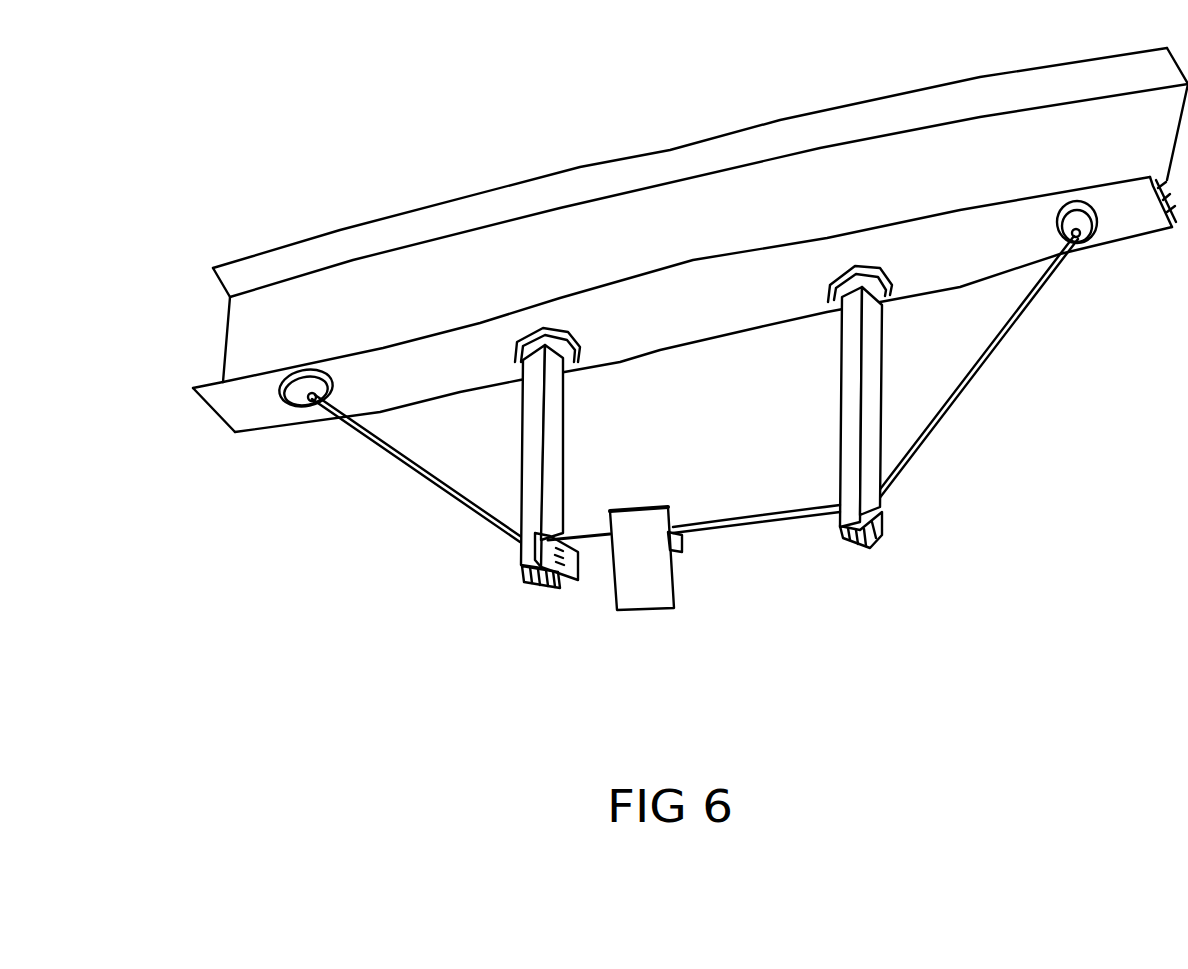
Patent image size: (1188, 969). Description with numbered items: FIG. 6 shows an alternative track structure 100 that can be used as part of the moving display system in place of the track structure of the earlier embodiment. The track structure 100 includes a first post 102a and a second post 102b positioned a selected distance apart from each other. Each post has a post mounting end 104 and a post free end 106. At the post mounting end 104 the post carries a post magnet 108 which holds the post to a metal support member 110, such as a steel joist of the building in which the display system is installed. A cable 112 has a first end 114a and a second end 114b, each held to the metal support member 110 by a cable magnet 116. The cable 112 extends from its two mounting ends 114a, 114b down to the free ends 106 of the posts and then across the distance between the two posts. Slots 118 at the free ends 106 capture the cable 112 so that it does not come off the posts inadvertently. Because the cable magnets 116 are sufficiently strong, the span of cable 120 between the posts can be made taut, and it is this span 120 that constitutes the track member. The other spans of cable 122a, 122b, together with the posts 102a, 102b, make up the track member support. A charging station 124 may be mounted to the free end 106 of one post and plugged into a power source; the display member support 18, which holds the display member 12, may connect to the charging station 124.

The track structure 100 is at (259, 588).
The metal support member 110 is at (247, 328).
The cable magnet 116 is at (280, 402).
The first end of cable 114a is at (313, 407).
The second end of cable 114b is at (1082, 243).
The span of cable 122a is at (413, 480).
The span of cable 122b is at (973, 385).
The cable 112 is at (937, 428).
The first post 102a is at (558, 418).
The second post 102b is at (878, 373).
The post mounting end 104 is at (530, 372).
The post magnet 108 is at (513, 353).
The post free end 106 is at (518, 562).
The slot 118 is at (546, 586).
The charging station 124 is at (577, 583).
The display member 12 is at (683, 595).
The display member support 18 is at (683, 543).
The span of cable between posts 120 is at (777, 523).